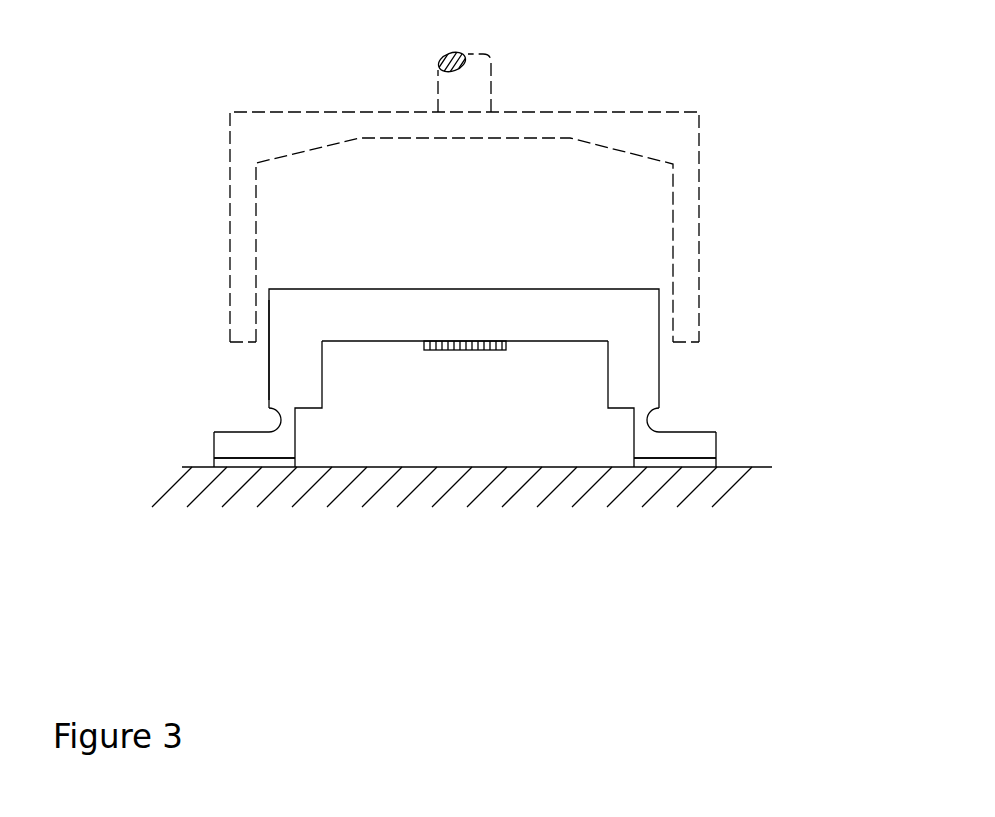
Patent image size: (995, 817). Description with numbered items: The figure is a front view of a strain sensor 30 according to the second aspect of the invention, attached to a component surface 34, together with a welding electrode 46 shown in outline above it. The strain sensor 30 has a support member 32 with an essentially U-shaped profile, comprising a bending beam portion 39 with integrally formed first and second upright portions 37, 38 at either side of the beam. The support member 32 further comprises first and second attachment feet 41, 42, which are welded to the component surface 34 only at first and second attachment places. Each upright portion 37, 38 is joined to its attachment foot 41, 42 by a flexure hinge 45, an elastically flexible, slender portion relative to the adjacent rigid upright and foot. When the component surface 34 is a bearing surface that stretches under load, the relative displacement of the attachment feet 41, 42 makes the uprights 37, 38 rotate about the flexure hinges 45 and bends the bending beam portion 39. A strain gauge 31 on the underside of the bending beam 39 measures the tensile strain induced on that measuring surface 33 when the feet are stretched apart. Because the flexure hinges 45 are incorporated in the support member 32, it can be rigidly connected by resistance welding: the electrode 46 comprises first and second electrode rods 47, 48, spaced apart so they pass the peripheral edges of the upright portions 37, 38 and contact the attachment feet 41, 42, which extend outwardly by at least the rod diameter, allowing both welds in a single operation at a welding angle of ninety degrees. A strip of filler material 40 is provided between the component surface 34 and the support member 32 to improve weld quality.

The strain sensor 30 is at (724, 108).
The electrode 46 is at (405, 80).
The first electrode rod 47 is at (242, 162).
The second electrode rod 48 is at (687, 190).
The support member 32 is at (724, 387).
The bending beam portion 39 is at (558, 316).
The first upright portion 37 is at (292, 373).
The flexure hinge 45 is at (280, 420).
The first attachment foot 41 is at (225, 447).
The second attachment foot 42 is at (683, 448).
The second upright portion 38 is at (653, 380).
The measuring surface 33 is at (590, 346).
The strain gauge 31 is at (463, 350).
The filler material 40 is at (253, 462).
The component surface 34 is at (775, 592).